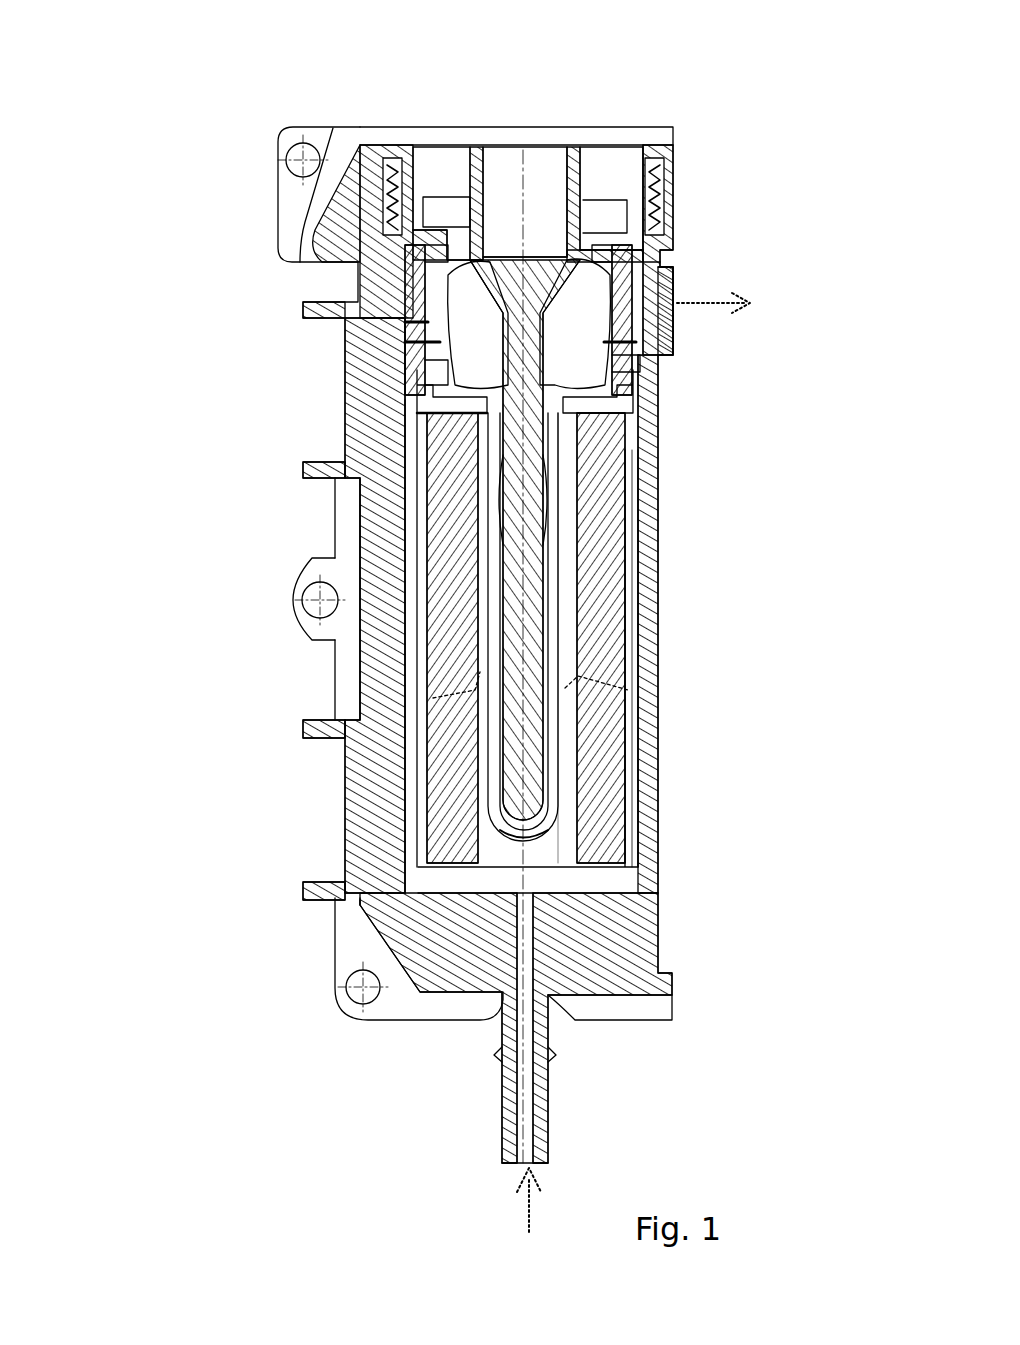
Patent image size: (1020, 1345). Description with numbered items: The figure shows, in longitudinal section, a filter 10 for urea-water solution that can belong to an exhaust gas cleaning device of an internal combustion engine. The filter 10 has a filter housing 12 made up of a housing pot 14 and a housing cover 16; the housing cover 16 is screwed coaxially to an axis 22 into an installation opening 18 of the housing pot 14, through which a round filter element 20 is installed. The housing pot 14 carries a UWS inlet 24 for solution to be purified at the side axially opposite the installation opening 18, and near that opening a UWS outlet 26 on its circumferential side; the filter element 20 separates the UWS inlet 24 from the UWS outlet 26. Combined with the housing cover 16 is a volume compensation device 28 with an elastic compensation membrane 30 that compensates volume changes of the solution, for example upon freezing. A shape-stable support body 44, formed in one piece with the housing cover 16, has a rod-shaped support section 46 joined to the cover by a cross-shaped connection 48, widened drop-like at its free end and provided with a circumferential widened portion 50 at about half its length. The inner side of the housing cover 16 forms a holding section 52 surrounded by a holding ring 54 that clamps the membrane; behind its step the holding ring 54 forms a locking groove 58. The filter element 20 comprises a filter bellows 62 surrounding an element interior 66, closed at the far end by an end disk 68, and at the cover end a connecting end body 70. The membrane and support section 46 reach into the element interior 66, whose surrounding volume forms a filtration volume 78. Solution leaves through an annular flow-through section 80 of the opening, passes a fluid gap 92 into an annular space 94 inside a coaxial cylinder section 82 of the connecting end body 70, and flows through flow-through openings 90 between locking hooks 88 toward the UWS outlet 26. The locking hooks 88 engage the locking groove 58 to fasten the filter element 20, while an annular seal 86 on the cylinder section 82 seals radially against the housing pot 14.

The filter 10 is at (122, 70).
The filter housing 12 is at (270, 165).
The housing pot 14 is at (370, 682).
The housing cover 16 is at (512, 130).
The installation opening 18 is at (673, 175).
The filter element 20 is at (630, 610).
The axis 22 is at (520, 940).
The UWS inlet 24 is at (548, 1108).
The UWS outlet 26 is at (673, 335).
The volume compensation device 28 is at (565, 500).
The compensation membrane 30 is at (560, 575).
The support body 44 is at (500, 322).
The support section 46 is at (525, 620).
The connection 48 is at (570, 290).
The widened portion 50 is at (535, 485).
The holding section 52 is at (597, 250).
The holding ring 54 is at (668, 250).
The locking groove 58 is at (410, 300).
The filter bellows 62 is at (607, 770).
The element interior 66 is at (560, 730).
The end disk 68 is at (440, 877).
The connecting end body 70 is at (415, 422).
The filtration volume 78 is at (487, 841).
The flow-through section 80 is at (478, 420).
The cylinder section 82 is at (405, 322).
The annular seal 86 is at (412, 372).
The locking hooks 88 is at (673, 322).
The flow-through opening 90 is at (655, 360).
The fluid gap 92 is at (487, 413).
The annular space 94 is at (428, 362).